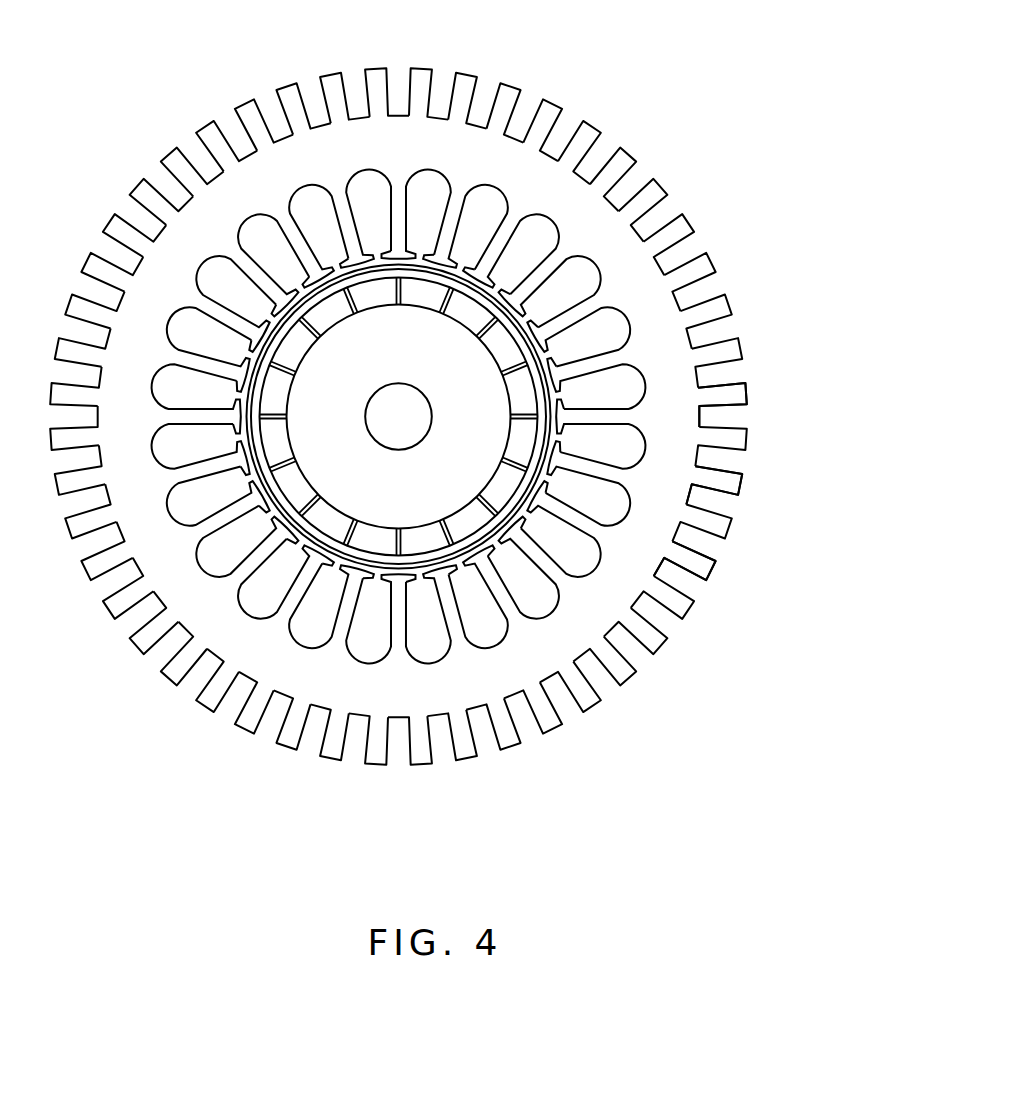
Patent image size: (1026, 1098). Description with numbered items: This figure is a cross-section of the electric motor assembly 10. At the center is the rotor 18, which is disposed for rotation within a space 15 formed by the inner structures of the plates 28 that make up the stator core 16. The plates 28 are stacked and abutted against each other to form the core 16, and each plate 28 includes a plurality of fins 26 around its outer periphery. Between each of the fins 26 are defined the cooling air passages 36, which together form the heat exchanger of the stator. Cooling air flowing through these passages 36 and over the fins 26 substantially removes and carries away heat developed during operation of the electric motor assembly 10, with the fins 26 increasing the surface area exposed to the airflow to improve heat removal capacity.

The electric motor assembly 10 is at (731, 106).
The space 15 is at (517, 330).
The core 16 is at (567, 588).
The rotor 18 is at (483, 398).
The fins 26 is at (743, 482).
The plates 28 is at (641, 552).
The cooling air passages 36 is at (690, 257).